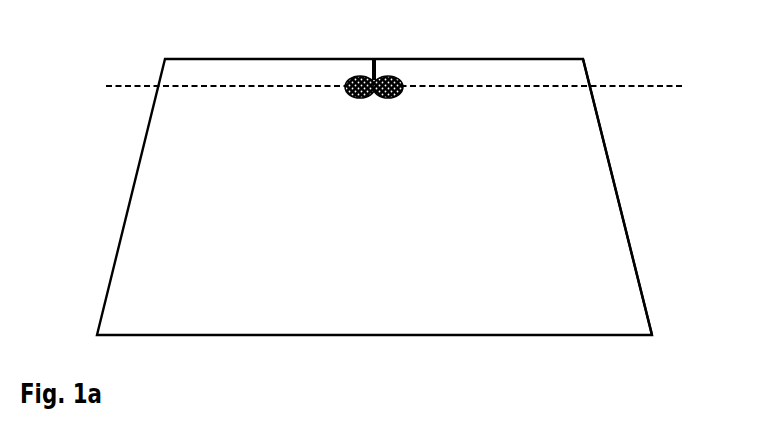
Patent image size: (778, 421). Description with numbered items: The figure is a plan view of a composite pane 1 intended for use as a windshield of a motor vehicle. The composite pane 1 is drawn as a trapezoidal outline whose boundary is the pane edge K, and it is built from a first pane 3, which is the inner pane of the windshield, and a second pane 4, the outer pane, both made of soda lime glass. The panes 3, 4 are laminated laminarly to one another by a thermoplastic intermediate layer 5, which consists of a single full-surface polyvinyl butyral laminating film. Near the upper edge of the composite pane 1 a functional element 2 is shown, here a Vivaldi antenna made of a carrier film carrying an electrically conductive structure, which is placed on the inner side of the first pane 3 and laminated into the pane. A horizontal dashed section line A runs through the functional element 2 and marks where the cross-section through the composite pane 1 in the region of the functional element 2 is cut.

The composite pane 1 is at (422, 197).
The functional element 2 is at (402, 81).
The first pane 3 is at (422, 197).
The second pane 4 is at (374, 197).
The thermoplastic intermediate layer 5 is at (598, 270).
The pane edge K is at (587, 70).
The section line A is at (399, 86).